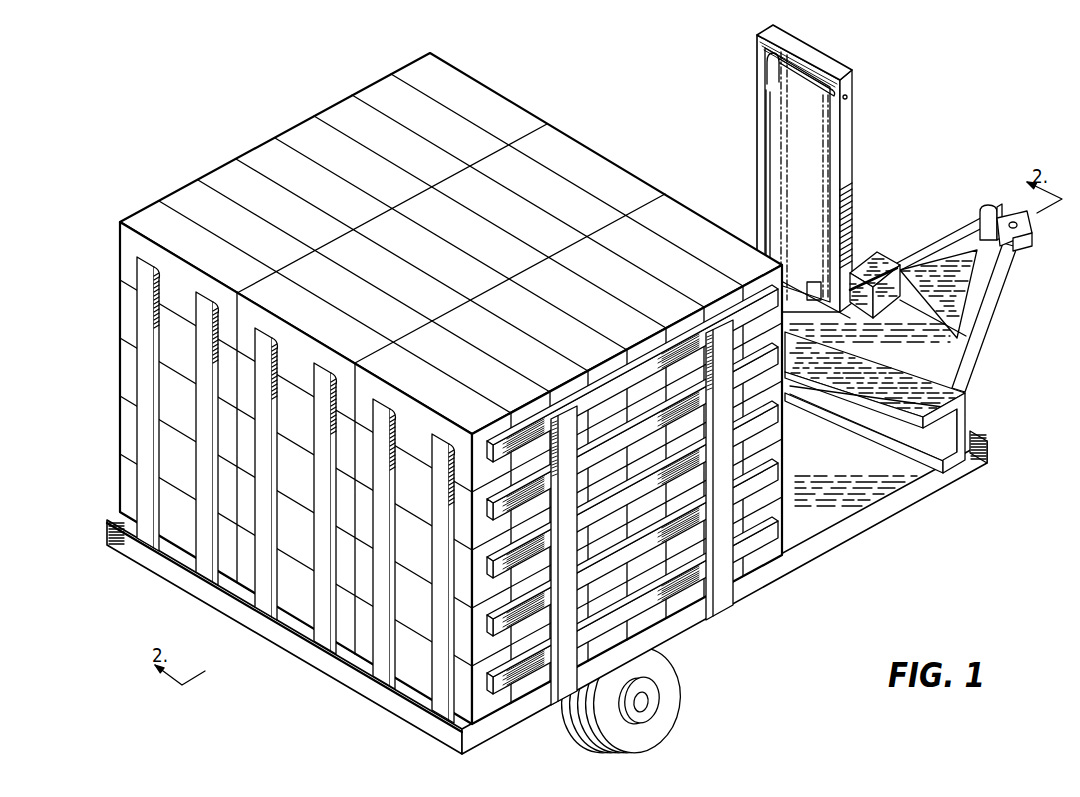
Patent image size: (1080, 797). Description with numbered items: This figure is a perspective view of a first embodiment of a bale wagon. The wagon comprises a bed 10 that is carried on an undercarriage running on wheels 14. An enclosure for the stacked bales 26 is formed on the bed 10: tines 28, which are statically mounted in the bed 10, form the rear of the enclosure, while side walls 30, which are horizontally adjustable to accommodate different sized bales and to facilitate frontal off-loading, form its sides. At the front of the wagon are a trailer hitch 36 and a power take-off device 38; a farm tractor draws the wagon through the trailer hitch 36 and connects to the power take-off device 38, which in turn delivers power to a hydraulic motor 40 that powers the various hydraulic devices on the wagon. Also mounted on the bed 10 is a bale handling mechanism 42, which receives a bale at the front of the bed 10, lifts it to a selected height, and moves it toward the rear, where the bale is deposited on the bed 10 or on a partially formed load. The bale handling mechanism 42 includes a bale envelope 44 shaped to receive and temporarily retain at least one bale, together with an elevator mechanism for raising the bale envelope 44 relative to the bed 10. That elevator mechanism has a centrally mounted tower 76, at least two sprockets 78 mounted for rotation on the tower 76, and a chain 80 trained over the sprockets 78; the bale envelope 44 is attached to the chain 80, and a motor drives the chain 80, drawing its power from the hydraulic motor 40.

The bed 10 is at (694, 618).
The wheels 14 is at (668, 688).
The stacked bales 26 is at (515, 122).
The tines 28 is at (320, 624).
The side walls 30 is at (766, 427).
The trailer hitch 36 is at (1003, 266).
The power take-off device 38 is at (972, 222).
The hydraulic motor 40 is at (866, 258).
The bale handling mechanism 42 is at (843, 168).
The bale envelope 44 is at (966, 418).
The tower 76 is at (841, 62).
The sprockets 78 is at (822, 100).
The chain 80 is at (786, 158).